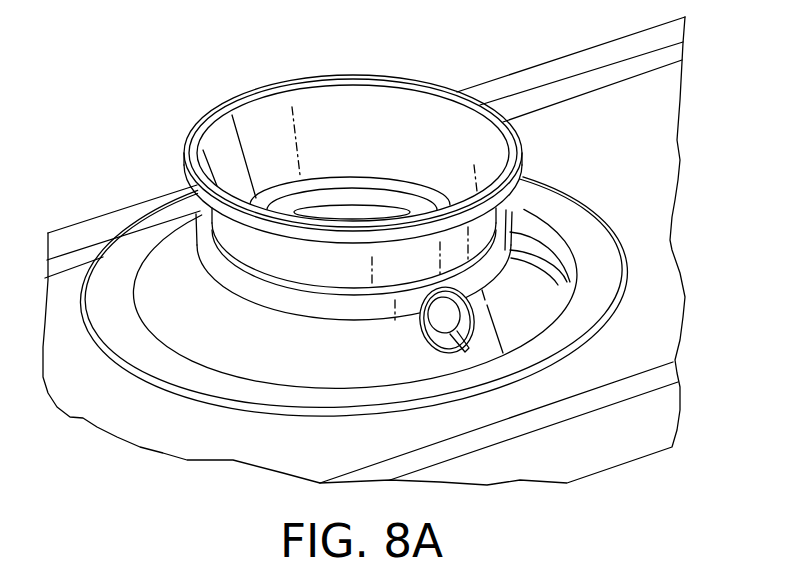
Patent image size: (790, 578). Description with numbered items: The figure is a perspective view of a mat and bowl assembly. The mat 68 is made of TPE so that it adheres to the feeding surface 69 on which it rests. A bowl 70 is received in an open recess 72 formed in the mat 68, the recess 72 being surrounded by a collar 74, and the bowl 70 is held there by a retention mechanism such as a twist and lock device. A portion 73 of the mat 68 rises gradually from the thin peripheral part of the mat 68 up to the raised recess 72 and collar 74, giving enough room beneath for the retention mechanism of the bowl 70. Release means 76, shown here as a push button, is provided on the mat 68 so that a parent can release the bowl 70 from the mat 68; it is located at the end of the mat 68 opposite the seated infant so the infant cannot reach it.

The mat 68 is at (587, 298).
The feeding surface 69 is at (637, 100).
The bowl 70 is at (457, 90).
The open recess 72 is at (505, 212).
The portion of the mat 73 is at (177, 327).
The collar 74 is at (573, 268).
The release means 76 is at (443, 317).